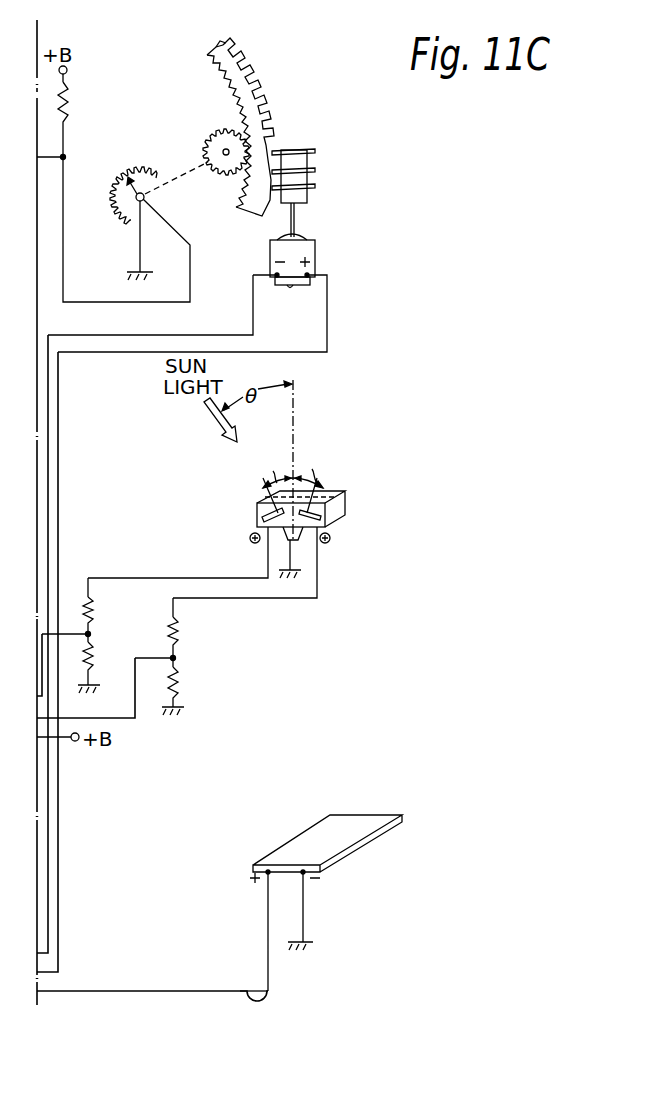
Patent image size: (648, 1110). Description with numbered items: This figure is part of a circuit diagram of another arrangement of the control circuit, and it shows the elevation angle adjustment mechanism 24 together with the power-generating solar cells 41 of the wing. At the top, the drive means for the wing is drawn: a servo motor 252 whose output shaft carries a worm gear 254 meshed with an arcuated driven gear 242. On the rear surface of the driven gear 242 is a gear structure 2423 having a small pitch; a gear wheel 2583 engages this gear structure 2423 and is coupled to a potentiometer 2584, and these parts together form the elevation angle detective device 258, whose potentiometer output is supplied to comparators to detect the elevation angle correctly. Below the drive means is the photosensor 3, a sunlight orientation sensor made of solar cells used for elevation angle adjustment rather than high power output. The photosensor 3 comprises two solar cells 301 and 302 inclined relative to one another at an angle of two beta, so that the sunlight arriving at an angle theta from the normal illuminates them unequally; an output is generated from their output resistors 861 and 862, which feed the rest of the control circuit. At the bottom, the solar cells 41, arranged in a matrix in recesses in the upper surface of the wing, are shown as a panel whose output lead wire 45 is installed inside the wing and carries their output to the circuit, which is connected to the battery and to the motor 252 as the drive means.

The elevation angle adjustment mechanism 24 is at (385, 274).
The arcuated driven gear 242 is at (228, 52).
The gear structure 2423 is at (210, 55).
The elevation angle detective device 258 is at (226, 108).
The gear wheel 2583 is at (217, 177).
The potentiometer 2584 is at (122, 224).
The worm gear 254 is at (304, 192).
The servo motor 252 is at (316, 250).
The photosensor 3 is at (353, 430).
The solar cell 301 is at (321, 499).
The solar cell 302 is at (268, 502).
The output resistor 862 is at (92, 655).
The output resistor 861 is at (178, 676).
The solar cells 41 is at (343, 832).
The output lead wire 45 is at (268, 991).